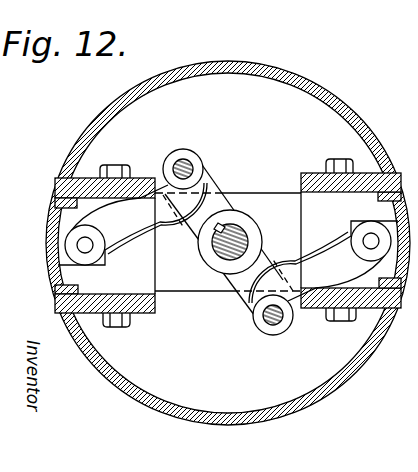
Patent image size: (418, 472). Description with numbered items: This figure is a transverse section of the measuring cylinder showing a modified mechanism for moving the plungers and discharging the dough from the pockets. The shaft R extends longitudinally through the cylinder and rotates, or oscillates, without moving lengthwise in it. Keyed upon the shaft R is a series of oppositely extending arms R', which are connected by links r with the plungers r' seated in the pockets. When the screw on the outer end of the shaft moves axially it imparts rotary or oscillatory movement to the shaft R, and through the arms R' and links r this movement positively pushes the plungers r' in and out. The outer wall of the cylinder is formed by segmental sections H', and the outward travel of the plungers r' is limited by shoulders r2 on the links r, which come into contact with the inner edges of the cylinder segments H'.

The segmental section H' is at (228, 243).
The plunger r' is at (82, 246).
The link r is at (228, 243).
The shoulder r2 is at (236, 241).
The arm R' is at (224, 237).
The shaft R is at (227, 270).